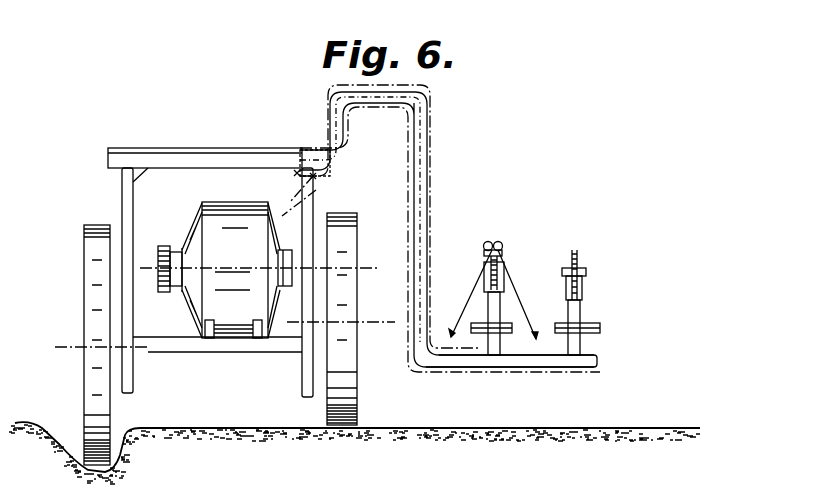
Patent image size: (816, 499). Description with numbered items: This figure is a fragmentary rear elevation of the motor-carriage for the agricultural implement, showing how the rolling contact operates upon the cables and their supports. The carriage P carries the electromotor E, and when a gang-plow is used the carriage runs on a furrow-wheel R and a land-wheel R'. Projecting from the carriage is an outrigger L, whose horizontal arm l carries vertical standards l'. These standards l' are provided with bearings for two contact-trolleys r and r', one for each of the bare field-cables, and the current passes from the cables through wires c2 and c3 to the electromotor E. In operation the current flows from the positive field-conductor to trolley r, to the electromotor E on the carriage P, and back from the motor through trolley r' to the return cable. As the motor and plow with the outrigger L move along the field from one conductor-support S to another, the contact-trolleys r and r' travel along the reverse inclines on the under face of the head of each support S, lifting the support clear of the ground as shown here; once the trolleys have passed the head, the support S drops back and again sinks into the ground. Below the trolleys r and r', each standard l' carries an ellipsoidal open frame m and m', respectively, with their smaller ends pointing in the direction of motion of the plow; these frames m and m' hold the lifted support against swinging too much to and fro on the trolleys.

The carriage P is at (133, 218).
The electromotor E is at (225, 270).
The furrow-wheel R is at (77, 345).
The land-wheel R' is at (356, 319).
The outrigger L is at (428, 210).
The wire c2 is at (438, 146).
The wire c3 is at (458, 386).
The conductor-support S is at (475, 298).
The contact-trolley r is at (502, 264).
The contact-trolley r' is at (584, 268).
The horizontal arm l is at (510, 380).
The vertical standard l' is at (546, 308).
The ellipsoidal open frame m is at (501, 339).
The ellipsoidal open frame m' is at (592, 340).